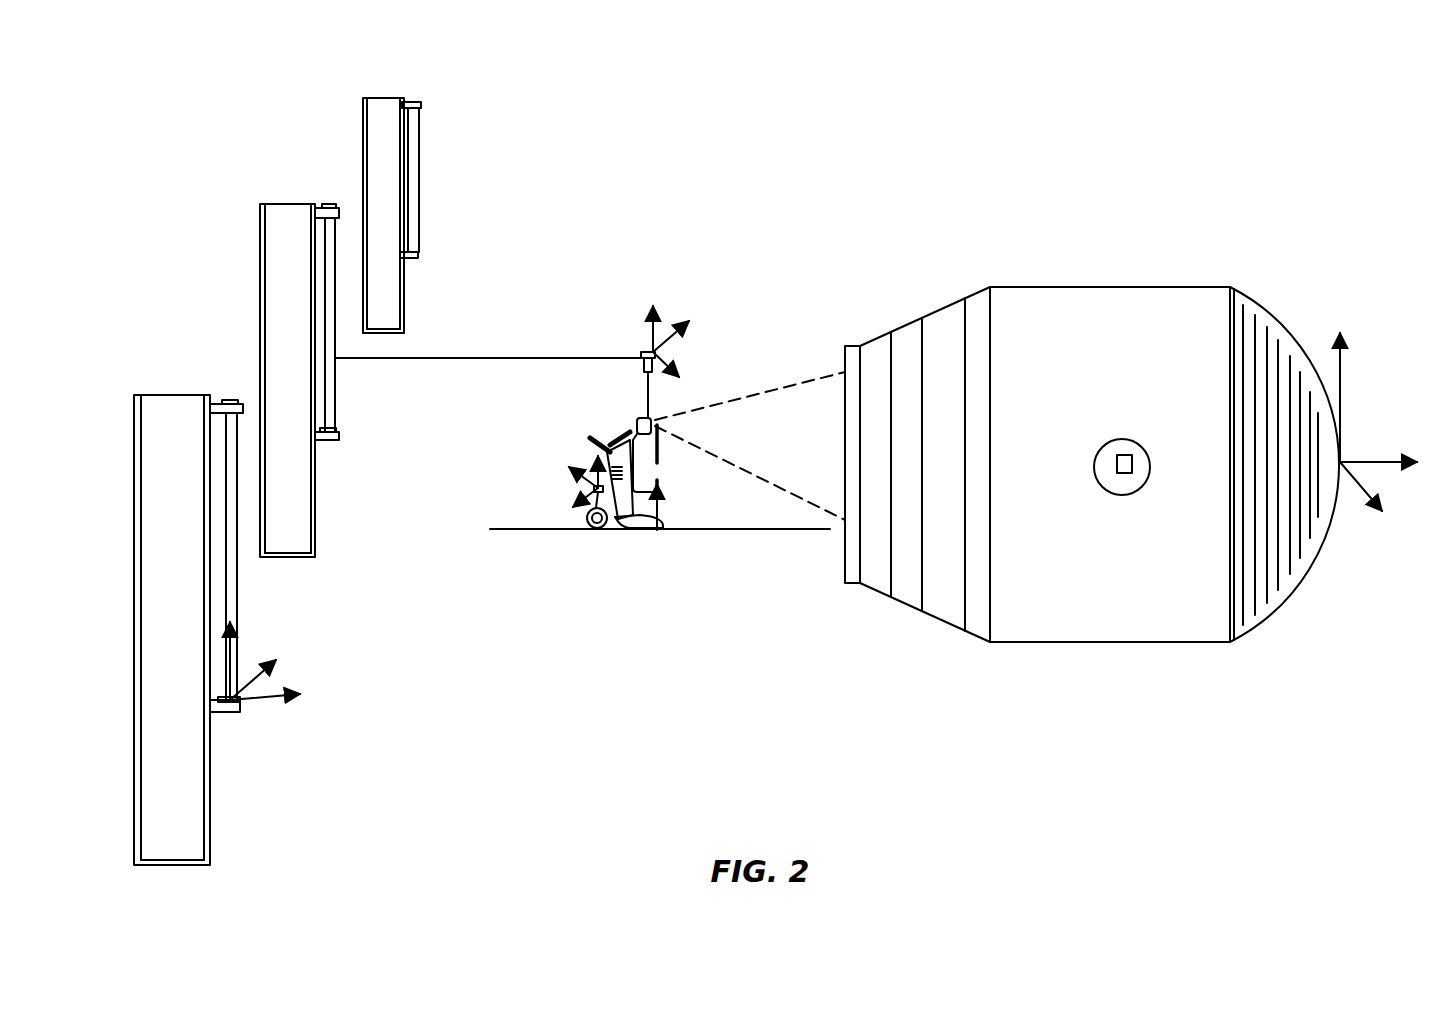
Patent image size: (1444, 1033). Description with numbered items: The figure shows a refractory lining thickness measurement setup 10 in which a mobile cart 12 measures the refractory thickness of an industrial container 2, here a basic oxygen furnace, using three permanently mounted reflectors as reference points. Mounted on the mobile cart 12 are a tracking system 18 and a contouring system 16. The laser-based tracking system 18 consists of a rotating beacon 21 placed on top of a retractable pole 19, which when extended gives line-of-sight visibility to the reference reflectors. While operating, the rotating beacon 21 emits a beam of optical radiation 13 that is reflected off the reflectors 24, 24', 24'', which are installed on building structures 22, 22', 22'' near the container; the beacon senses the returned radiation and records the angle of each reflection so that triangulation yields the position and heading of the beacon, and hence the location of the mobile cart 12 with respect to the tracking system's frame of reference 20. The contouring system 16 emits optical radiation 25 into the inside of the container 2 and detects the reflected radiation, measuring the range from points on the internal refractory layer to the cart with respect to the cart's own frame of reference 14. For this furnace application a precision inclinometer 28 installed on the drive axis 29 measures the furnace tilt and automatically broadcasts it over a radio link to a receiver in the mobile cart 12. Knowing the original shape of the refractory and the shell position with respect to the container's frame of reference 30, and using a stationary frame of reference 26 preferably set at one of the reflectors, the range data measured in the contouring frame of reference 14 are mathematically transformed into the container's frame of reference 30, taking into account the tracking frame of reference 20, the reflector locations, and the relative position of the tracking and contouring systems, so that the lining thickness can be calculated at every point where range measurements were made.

The container 2 is at (1120, 287).
The refractory lining thickness measurement setup 10 is at (873, 190).
The mobile cart 12 is at (625, 500).
The beam of optical radiation 13 is at (475, 357).
The frame of reference of the contouring system 14 is at (578, 488).
The contouring system 16 is at (633, 420).
The tracking system 18 is at (637, 352).
The pole 19 is at (650, 397).
The frame of reference of the tracking system 20 is at (665, 327).
The rotating beacon 21 is at (641, 355).
The building structure 22 is at (142, 612).
The building structure 22' is at (240, 378).
The building structure 22'' is at (337, 214).
The reflector 24 is at (261, 556).
The reflector 24' is at (366, 322).
The reflector 24'' is at (457, 180).
The optical radiation 25 is at (790, 384).
The stationary frame of reference 26 is at (258, 692).
The precision inclinometer 28 is at (1135, 455).
The drive axis 29 is at (1137, 495).
The frame of reference of the container 30 is at (1348, 413).